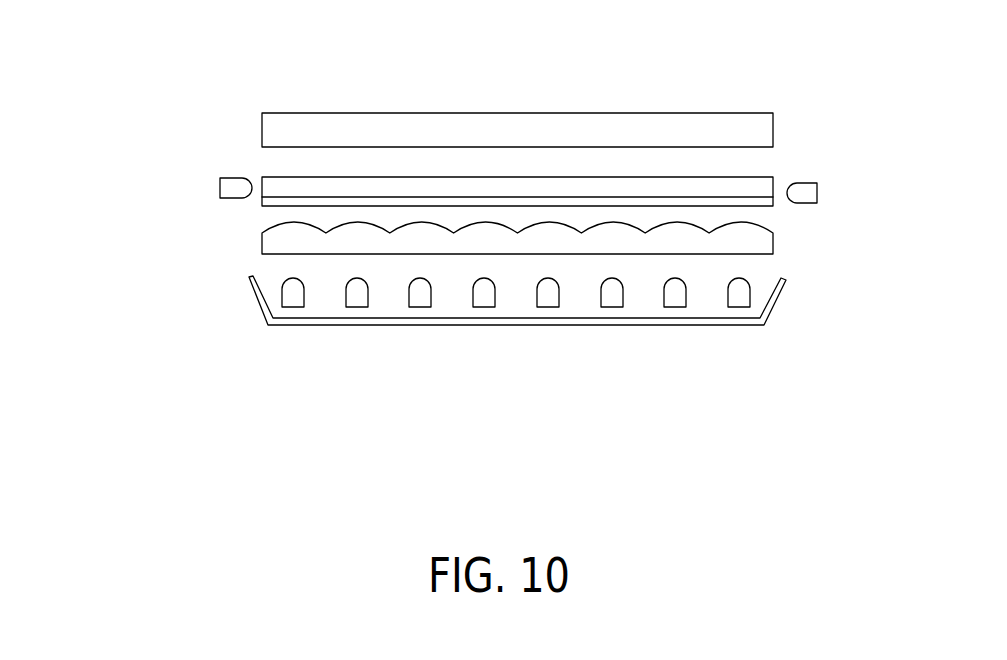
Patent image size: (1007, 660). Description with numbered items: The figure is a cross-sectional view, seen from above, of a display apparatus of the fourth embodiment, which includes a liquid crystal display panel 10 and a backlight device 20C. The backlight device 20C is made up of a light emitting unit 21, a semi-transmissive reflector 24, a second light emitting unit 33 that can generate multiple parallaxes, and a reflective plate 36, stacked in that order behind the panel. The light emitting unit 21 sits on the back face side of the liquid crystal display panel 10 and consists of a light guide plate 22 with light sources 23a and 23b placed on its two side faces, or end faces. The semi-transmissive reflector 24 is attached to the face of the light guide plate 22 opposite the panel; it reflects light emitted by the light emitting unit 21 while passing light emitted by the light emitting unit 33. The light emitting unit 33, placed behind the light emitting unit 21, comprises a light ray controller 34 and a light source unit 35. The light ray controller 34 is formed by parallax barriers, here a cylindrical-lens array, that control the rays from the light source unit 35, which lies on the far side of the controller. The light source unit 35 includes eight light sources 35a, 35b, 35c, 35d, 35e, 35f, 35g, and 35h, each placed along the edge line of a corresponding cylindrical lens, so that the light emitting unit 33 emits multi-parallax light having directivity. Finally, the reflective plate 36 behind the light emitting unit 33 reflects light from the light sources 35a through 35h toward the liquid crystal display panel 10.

The liquid crystal display panel 10 is at (722, 120).
The backlight device 20C is at (60, 236).
The light emitting unit 21 is at (147, 190).
The light guide plate 22 is at (486, 186).
The light source 23a is at (232, 183).
The light source 23b is at (800, 188).
The semi-transmissive reflector 24 is at (640, 207).
The light emitting unit 33 is at (825, 437).
The light ray controller 34 is at (267, 239).
The light source unit 35 is at (540, 353).
The light source 35a is at (295, 303).
The light source 35b is at (359, 303).
The light source 35c is at (422, 303).
The light source 35d is at (486, 303).
The light source 35e is at (550, 303).
The light source 35f is at (614, 303).
The light source 35g is at (677, 303).
The light source 35h is at (744, 323).
The reflective plate 36 is at (777, 308).